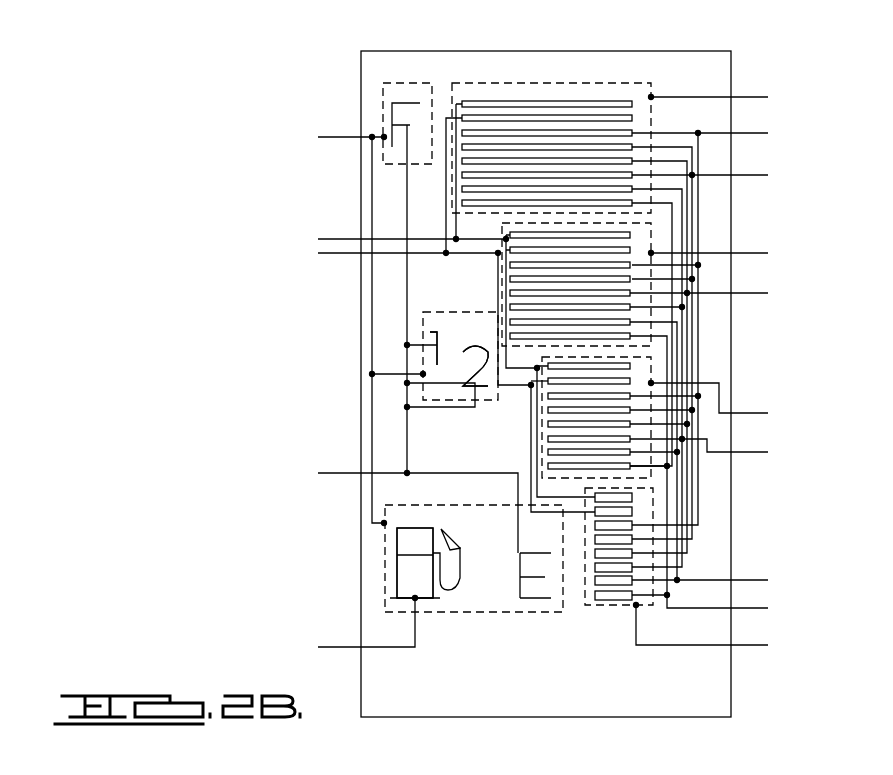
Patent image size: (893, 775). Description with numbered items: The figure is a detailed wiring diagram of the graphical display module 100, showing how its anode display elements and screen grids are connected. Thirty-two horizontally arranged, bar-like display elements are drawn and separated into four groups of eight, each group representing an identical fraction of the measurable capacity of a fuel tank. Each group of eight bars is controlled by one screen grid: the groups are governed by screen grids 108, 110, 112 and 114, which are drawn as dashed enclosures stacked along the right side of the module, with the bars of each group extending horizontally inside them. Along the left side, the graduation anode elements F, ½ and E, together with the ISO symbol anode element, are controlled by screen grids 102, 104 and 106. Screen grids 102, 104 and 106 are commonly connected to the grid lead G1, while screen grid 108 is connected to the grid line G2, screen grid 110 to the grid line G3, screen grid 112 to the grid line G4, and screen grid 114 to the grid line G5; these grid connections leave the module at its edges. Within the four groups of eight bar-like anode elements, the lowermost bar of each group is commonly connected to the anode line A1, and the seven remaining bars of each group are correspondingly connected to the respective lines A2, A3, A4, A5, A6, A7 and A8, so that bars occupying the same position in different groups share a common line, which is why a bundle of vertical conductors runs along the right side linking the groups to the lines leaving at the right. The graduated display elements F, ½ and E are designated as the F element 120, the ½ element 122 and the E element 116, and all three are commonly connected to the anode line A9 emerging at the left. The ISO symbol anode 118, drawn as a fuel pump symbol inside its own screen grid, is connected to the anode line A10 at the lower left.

The graphical display module 100 is at (590, 50).
The screen grid 102 is at (382, 84).
The screen grid 104 is at (422, 314).
The screen grid 106 is at (445, 613).
The screen grid 108 is at (588, 606).
The screen grid 110 is at (541, 430).
The screen grid 112 is at (500, 271).
The screen grid 114 is at (638, 83).
The graduated display element E 116 is at (531, 613).
The ISO symbol anode 118 is at (397, 540).
The graduated display element F 120 is at (415, 103).
The graduated display element ½ 122 is at (462, 333).
The grid lead G1 is at (353, 327).
The grid line G2 is at (715, 636).
The grid line G3 is at (723, 404).
The grid line G4 is at (721, 257).
The grid line G5 is at (721, 99).
The anode line A1 is at (712, 479).
The anode line A2 is at (712, 398).
The anode line A3 is at (712, 378).
The anode line A4 is at (711, 357).
The anode line A5 is at (711, 343).
The anode line A6 is at (711, 325).
The anode line A7 is at (437, 315).
The anode line A8 is at (394, 235).
The anode line A9 is at (400, 508).
The anode line A10 is at (348, 630).